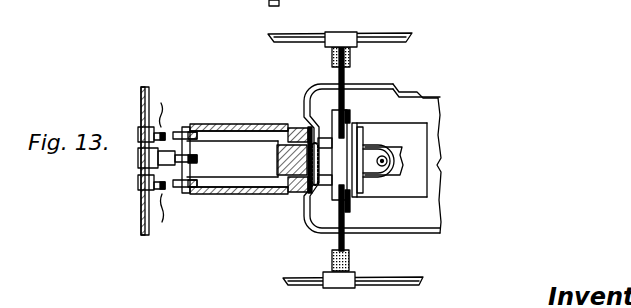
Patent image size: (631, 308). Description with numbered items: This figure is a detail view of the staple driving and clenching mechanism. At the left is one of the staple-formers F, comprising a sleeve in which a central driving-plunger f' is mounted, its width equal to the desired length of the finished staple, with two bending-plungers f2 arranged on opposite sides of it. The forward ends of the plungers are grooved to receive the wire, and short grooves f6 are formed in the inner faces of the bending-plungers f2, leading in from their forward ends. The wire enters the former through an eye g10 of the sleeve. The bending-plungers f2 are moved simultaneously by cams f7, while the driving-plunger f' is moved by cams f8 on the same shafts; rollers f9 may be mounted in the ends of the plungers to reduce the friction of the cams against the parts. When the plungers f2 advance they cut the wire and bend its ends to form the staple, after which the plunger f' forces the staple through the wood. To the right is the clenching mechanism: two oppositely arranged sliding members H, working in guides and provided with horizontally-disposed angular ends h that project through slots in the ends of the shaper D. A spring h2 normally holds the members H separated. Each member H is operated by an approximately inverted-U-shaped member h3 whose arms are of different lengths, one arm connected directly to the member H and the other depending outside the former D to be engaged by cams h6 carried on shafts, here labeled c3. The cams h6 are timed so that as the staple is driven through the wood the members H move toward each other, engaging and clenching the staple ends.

The cams f8 is at (147, 158).
The cams f7 is at (166, 164).
The rollers f9 is at (180, 132).
The staple-former F is at (235, 150).
The bending-plungers f2 is at (217, 123).
The central driving-plunger f' is at (232, 159).
The short grooves f6 is at (297, 127).
The eye g10 is at (296, 194).
The shaper D is at (418, 101).
The sliding members H is at (355, 120).
The angular ends h is at (322, 182).
The inverted-U-shape members h3 is at (338, 77).
The cams h6 is at (350, 57).
The cross bar c3 is at (388, 38).
The spring h2 is at (373, 148).